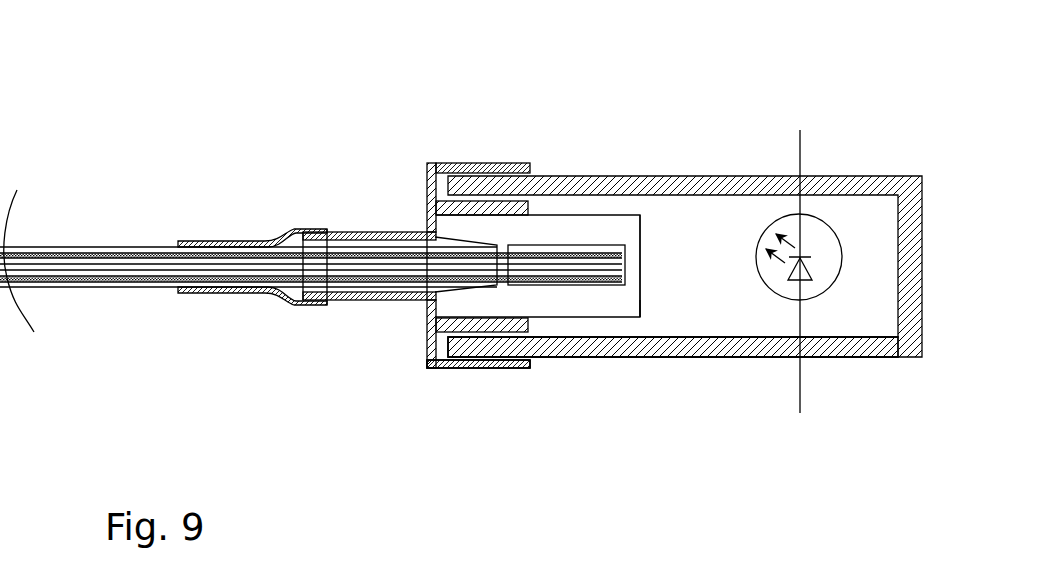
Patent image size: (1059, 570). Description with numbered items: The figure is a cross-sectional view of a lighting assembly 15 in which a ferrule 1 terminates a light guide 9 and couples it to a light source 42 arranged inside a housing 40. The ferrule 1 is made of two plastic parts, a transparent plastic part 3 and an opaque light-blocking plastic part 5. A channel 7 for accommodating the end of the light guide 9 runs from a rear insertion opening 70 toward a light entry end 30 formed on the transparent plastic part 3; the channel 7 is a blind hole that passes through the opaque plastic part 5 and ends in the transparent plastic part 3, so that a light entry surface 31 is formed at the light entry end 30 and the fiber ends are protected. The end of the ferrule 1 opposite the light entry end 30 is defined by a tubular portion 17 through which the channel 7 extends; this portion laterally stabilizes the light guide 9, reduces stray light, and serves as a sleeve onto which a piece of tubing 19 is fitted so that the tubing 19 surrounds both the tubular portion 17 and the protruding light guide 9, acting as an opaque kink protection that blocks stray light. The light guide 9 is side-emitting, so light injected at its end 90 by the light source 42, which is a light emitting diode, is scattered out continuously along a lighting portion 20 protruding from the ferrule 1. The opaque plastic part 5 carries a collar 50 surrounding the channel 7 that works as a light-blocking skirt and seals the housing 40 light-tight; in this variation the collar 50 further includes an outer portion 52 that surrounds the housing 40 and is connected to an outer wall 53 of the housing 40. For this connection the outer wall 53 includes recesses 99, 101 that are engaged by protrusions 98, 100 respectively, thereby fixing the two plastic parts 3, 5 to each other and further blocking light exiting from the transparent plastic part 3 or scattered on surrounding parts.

The lighting assembly 15 is at (50, 72).
The light guide 9 is at (65, 233).
The piece of tubing 19 is at (213, 240).
The rear insertion opening 70 is at (295, 227).
The tubular portion 17 is at (333, 230).
The channel 7 is at (418, 293).
The collar 50 is at (426, 163).
The outer portion 52 is at (470, 163).
The outer wall 53 is at (505, 181).
The opaque light-blocking plastic part 5 is at (482, 212).
The housing 40 is at (888, 357).
The protrusion 98 is at (503, 352).
The protrusion 100 is at (673, 347).
The recess 99 is at (485, 363).
The recess 101 is at (478, 364).
The transparent plastic part 3 is at (578, 215).
The end of light guide 90 is at (613, 248).
The light entry surface 31 is at (641, 242).
The light entry end 30 is at (645, 303).
The light source 42 is at (807, 283).
The lighting portion 20 is at (170, 324).
The ferrule 1 is at (381, 389).